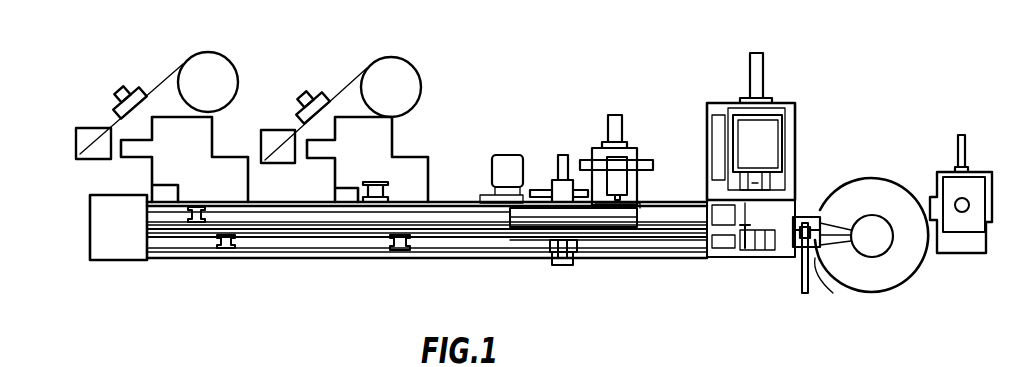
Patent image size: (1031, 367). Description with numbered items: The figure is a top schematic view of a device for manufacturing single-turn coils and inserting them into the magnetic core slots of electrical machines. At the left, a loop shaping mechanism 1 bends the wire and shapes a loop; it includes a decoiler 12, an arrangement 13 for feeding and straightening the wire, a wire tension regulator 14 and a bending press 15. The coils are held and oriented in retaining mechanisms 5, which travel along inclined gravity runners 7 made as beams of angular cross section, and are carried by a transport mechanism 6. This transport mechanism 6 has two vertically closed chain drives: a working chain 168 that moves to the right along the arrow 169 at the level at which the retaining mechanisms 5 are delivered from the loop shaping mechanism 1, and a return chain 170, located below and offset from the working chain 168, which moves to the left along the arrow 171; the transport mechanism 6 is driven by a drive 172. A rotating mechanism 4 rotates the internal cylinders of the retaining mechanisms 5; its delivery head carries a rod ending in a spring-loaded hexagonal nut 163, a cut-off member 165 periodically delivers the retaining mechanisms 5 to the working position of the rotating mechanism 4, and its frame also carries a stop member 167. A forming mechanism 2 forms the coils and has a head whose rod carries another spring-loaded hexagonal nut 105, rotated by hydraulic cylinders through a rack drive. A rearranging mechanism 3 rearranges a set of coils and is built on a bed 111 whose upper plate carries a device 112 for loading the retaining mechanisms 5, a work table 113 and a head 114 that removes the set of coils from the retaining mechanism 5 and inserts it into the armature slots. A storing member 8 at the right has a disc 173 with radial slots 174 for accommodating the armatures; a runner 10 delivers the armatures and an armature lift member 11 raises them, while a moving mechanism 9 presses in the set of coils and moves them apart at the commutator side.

The loop shaping mechanism 1 is at (336, 63).
The forming mechanism 2 is at (600, 127).
The rearranging mechanism 3 is at (783, 87).
The rotating mechanism 4 is at (558, 149).
The retaining mechanisms 5 is at (230, 250).
The transport mechanism 6 is at (194, 259).
The inclined gravity runners 7 is at (660, 243).
The storing member 8 is at (872, 168).
The moving mechanism 9 is at (997, 208).
The runner 10 is at (800, 280).
The armature lift member 11 is at (805, 207).
The decoiler 12 is at (229, 77).
The arrangement for feeding and straightening the wire 13 is at (126, 95).
The wire tension regulator 14 is at (83, 127).
The bending press 15 is at (232, 163).
The spring-loaded hexagonal nut 105 is at (632, 195).
The bed 111 is at (792, 133).
The device for loading the mechanisms 112 is at (713, 152).
The work table 113 is at (745, 235).
The head 114 is at (745, 125).
The spring-loaded hexagonal nut 163 is at (577, 235).
The cut-off member 165 is at (545, 247).
The stop member 167 is at (560, 263).
The working chain 168 is at (450, 212).
The arrow 169 is at (305, 193).
The return chain 170 is at (452, 240).
The arrow 171 is at (348, 263).
The drive 172 is at (103, 237).
The disc 173 is at (902, 195).
The radial slots 174 is at (833, 293).